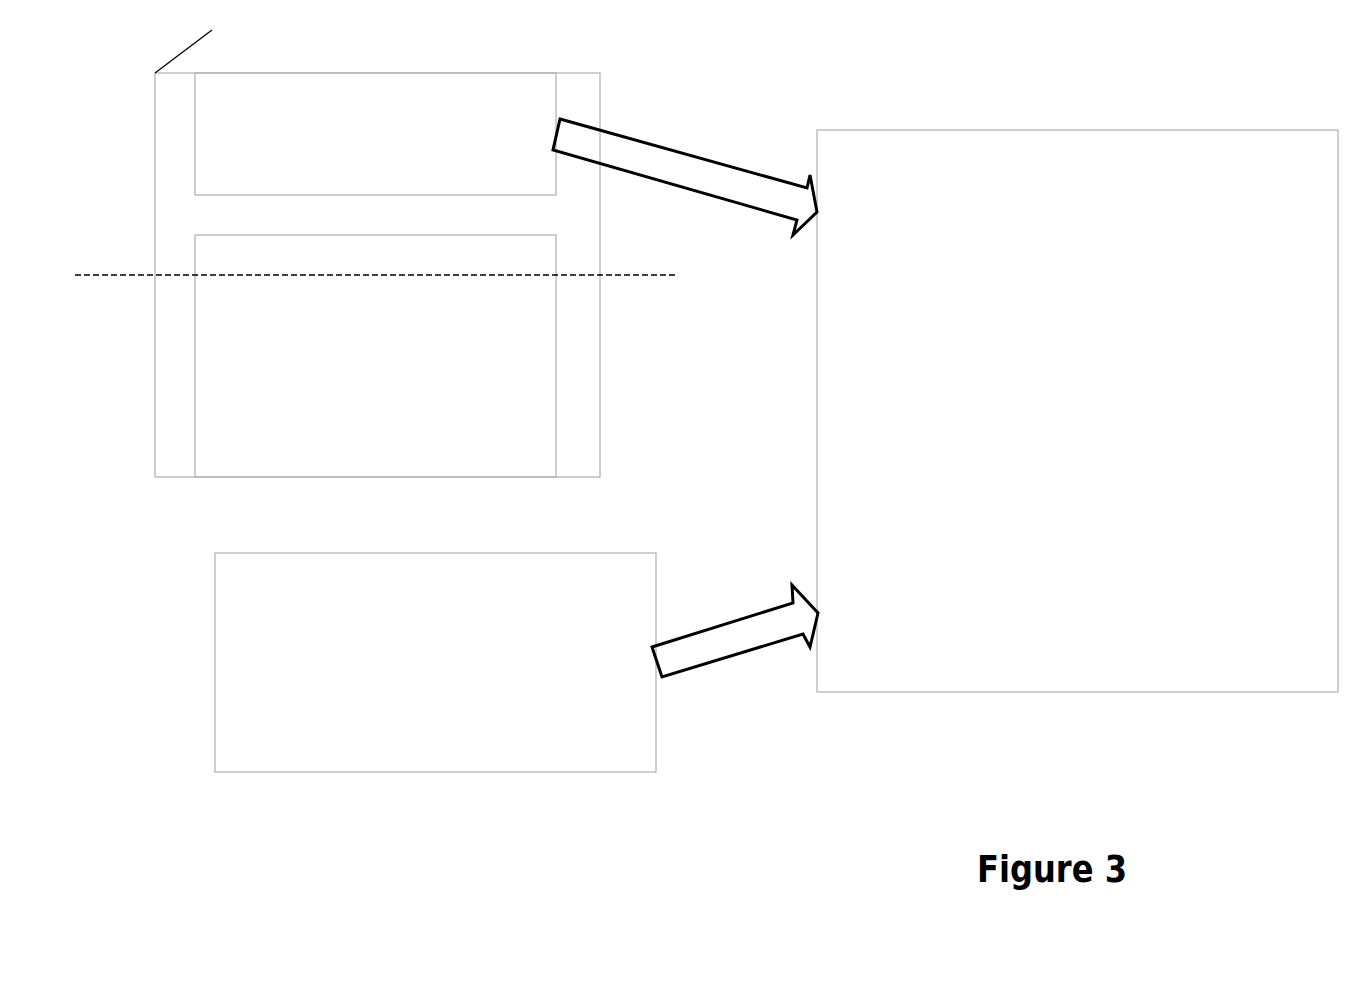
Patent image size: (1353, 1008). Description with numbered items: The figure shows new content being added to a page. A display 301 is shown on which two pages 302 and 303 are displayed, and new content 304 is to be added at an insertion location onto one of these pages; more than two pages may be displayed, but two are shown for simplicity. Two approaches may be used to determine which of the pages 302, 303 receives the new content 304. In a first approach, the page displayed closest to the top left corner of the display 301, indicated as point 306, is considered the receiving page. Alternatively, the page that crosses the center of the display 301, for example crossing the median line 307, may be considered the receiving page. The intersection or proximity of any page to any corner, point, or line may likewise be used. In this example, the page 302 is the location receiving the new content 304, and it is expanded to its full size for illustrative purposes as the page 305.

The display 301 is at (600, 358).
The page 302 is at (557, 173).
The page 303 is at (557, 420).
The new content 304 is at (437, 772).
The page 305 is at (1080, 692).
The point 306 is at (211, 45).
The median line 307 is at (638, 275).